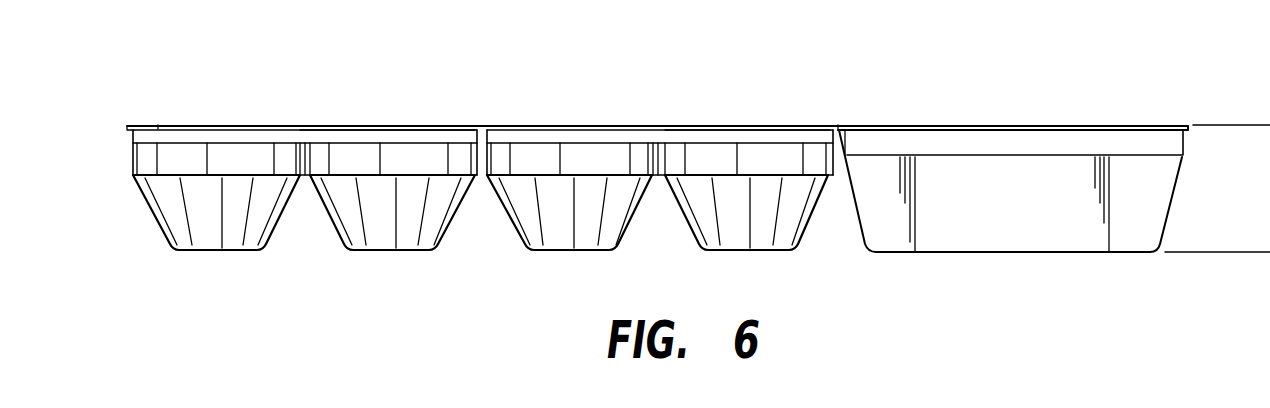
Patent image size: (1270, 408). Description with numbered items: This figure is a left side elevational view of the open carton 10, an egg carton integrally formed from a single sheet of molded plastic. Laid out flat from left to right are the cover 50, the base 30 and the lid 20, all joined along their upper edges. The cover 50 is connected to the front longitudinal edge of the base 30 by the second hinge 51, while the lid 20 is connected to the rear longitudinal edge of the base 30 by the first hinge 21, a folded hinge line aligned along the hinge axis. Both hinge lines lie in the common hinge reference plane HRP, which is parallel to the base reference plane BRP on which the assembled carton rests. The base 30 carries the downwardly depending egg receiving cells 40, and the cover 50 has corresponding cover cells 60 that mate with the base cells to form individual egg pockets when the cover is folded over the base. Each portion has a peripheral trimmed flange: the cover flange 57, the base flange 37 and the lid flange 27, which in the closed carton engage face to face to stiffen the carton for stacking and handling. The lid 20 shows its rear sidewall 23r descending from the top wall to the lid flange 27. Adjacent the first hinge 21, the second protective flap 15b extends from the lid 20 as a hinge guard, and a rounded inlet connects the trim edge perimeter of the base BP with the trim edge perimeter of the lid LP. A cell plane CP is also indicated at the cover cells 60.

The carton 10 is at (140, 80).
The lid 20 is at (955, 97).
The first hinge 21 is at (835, 176).
The rear sidewall 23r is at (993, 233).
The lid flange 27 is at (992, 126).
The second protective flap 15b is at (840, 127).
The base 30 is at (590, 97).
The base flange 37 is at (648, 126).
The egg receiving cells 40 is at (580, 250).
The cover 50 is at (345, 95).
The second hinge 51 is at (484, 127).
The cover flange 57 is at (246, 126).
The cups of third tray 60 is at (232, 250).
The cup plane CP is at (405, 126).
The trim edge perimeter of the base BP is at (755, 126).
The trim edge perimeter of the lid LP is at (1137, 126).
The hinge reference plane HRP is at (1231, 113).
The base reference plane BRP is at (1217, 237).